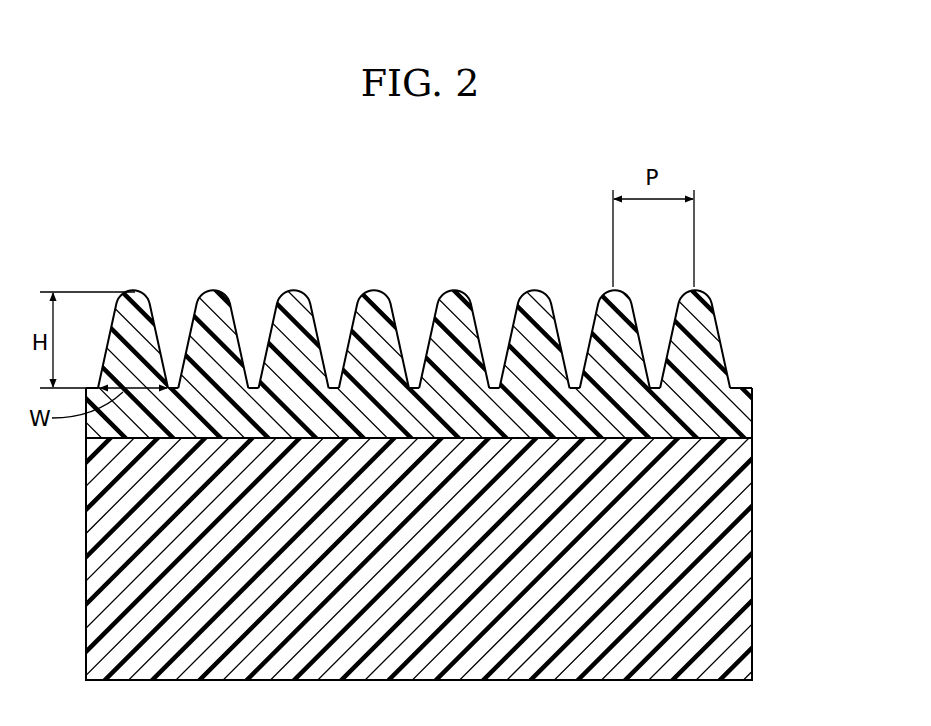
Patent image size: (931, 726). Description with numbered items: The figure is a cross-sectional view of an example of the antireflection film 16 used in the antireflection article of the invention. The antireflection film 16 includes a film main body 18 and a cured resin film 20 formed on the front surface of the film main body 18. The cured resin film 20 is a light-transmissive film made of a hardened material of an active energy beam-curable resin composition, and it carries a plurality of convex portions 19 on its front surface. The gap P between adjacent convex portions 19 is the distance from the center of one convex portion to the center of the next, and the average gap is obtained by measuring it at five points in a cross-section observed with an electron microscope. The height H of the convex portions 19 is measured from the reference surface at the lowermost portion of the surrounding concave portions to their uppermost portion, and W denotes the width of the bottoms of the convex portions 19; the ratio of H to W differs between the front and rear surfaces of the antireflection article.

The antireflection film 16 is at (416, 235).
The film main body 18 is at (746, 522).
The convex portions 19 is at (632, 302).
The cured resin film 20 is at (753, 406).